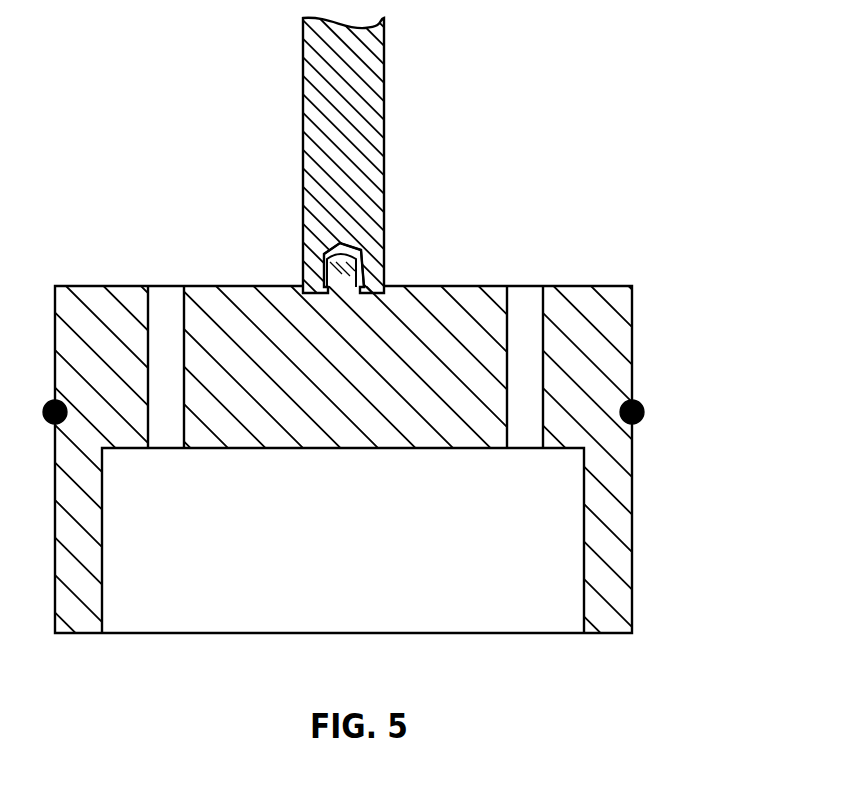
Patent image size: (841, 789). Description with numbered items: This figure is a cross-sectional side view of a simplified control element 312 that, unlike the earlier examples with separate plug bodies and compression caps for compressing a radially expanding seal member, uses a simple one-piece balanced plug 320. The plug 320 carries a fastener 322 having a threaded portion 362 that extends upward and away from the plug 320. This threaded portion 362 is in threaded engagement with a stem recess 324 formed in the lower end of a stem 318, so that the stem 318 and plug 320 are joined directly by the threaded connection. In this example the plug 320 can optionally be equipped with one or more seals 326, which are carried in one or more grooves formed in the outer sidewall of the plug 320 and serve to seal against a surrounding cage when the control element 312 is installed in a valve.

The control element 312 is at (455, 100).
The stem 318 is at (328, 140).
The balanced plug 320 is at (607, 307).
The fastener 322 is at (280, 236).
The threaded portion 362 is at (335, 272).
The stem recess 324 is at (360, 265).
The seals 326 is at (643, 409).